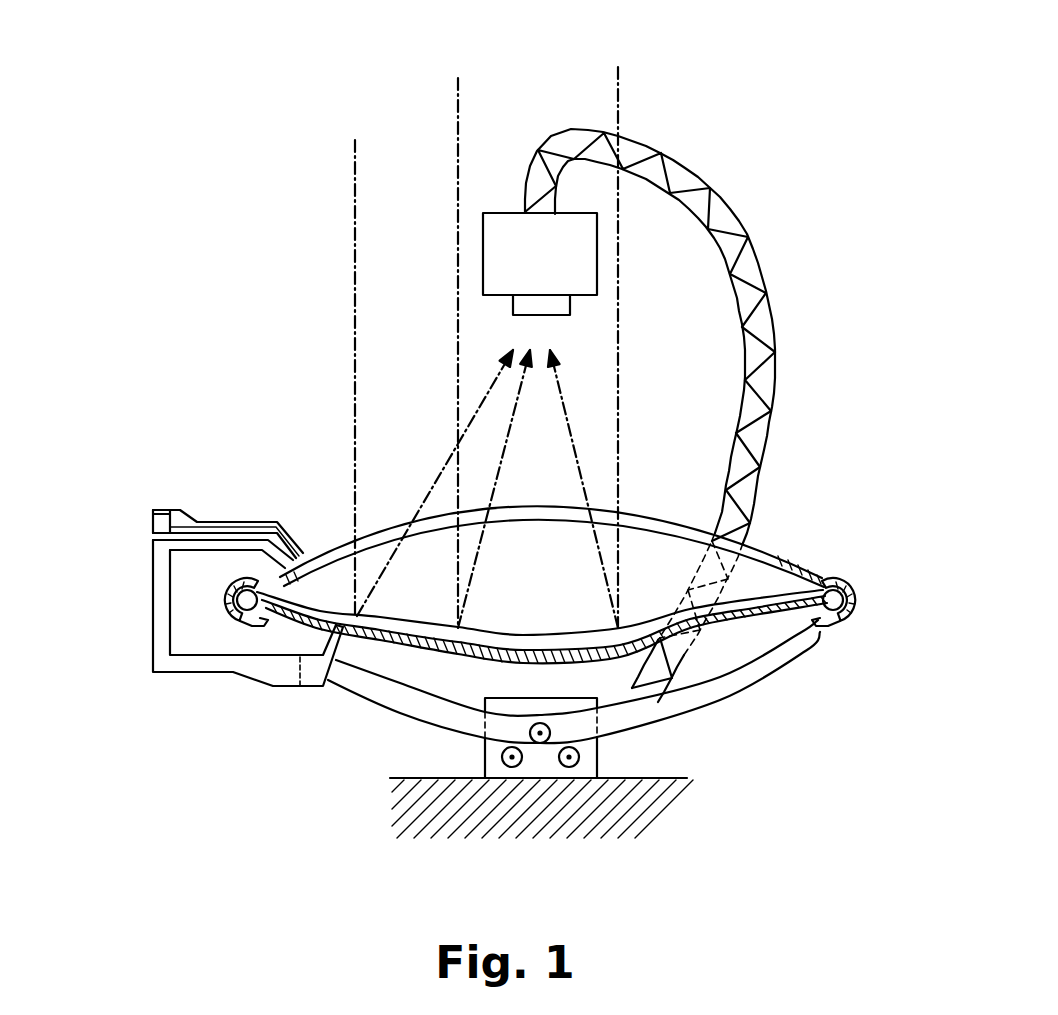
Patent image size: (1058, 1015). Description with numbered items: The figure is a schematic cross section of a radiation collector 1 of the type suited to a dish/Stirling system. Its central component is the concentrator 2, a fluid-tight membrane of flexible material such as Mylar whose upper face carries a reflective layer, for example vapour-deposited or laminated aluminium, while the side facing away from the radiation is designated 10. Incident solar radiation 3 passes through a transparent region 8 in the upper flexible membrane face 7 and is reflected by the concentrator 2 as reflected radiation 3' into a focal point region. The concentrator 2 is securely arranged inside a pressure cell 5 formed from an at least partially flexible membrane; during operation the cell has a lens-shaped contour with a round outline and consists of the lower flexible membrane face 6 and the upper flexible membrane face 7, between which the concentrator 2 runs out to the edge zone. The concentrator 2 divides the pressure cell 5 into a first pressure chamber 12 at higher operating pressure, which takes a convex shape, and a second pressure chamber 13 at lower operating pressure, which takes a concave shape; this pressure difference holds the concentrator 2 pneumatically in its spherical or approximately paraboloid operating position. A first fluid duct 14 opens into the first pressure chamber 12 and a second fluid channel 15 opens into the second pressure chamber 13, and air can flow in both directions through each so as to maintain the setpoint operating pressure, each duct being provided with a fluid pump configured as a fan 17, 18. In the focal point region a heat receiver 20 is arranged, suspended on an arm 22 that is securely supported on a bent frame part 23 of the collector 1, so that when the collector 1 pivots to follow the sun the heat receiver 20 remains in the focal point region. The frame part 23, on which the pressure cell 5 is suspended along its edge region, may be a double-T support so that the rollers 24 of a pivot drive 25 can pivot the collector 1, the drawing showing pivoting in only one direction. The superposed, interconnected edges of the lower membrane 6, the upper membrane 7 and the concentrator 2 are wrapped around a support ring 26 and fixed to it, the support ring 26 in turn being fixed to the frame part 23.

The radiation collector 1 is at (135, 183).
The concentrator 2 is at (808, 530).
The radiation 3 is at (518, 316).
The reflected radiation 3' is at (461, 410).
The pressure cell 5 is at (733, 612).
The lower flexible membrane face 6 is at (727, 637).
The upper flexible membrane face 7 is at (823, 573).
The transparent region 8 is at (383, 537).
The side of the concentrator facing away from the radiation 10 is at (802, 647).
The first pressure chamber 12 is at (400, 580).
The second pressure chamber 13 is at (433, 636).
The first fluid duct 14 is at (225, 520).
The second fluid channel 15 is at (180, 672).
The fan 17 is at (158, 515).
The fan 18 is at (295, 672).
The heat receiver 20 is at (543, 307).
The arm 22 is at (727, 208).
The frame part 23 is at (772, 658).
The rollers 24 is at (570, 763).
The pivot drive 25 is at (523, 705).
The support ring 26 is at (836, 602).